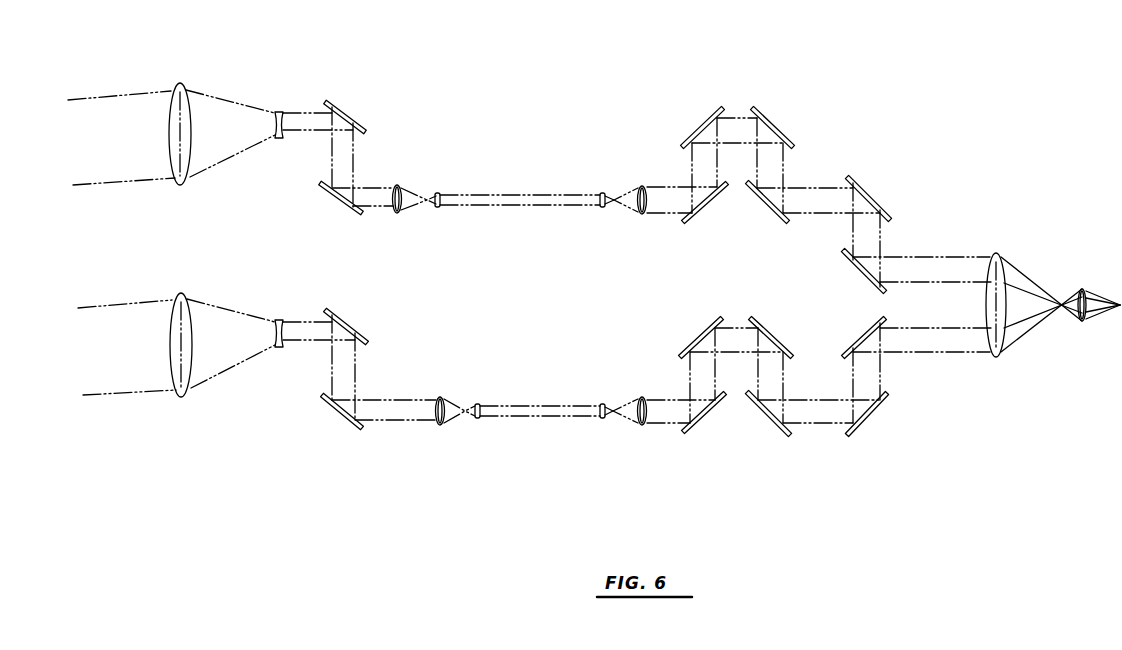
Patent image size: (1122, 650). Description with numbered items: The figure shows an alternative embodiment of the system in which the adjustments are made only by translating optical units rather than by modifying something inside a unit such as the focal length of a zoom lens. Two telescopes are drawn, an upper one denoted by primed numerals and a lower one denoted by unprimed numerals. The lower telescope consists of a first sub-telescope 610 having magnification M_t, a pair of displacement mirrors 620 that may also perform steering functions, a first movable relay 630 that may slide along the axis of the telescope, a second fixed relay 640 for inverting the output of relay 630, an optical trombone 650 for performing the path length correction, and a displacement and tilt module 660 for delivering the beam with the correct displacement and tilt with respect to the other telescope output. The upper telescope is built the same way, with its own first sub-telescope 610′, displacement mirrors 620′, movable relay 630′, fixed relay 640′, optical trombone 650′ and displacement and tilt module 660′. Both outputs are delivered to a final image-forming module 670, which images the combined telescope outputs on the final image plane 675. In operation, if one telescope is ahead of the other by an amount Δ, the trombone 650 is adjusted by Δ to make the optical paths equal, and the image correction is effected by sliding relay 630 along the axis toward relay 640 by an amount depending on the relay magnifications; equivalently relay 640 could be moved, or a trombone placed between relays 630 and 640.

The first sub-telescope 610′ is at (210, 103).
The pair of displacement mirrors 620′ is at (369, 144).
The first movable relay 630′ is at (469, 224).
The second fixed relay 640′ is at (651, 225).
The optical trombone 650′ is at (781, 140).
The displacement and tilt module 660′ is at (916, 211).
The first sub-telescope 610 is at (216, 321).
The pair of displacement mirrors 620 is at (378, 357).
The first movable relay 630 is at (496, 439).
The second fixed relay 640 is at (647, 439).
The optical trombone 650 is at (780, 349).
The displacement and tilt module 660 is at (917, 396).
The final image-forming module 670 is at (1020, 341).
The final image plane 675 is at (1121, 282).